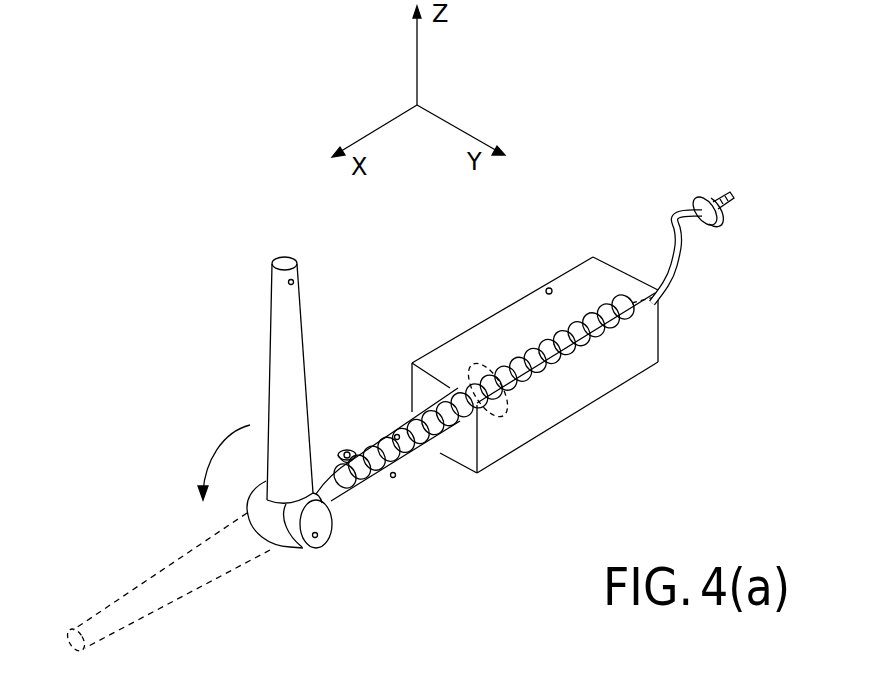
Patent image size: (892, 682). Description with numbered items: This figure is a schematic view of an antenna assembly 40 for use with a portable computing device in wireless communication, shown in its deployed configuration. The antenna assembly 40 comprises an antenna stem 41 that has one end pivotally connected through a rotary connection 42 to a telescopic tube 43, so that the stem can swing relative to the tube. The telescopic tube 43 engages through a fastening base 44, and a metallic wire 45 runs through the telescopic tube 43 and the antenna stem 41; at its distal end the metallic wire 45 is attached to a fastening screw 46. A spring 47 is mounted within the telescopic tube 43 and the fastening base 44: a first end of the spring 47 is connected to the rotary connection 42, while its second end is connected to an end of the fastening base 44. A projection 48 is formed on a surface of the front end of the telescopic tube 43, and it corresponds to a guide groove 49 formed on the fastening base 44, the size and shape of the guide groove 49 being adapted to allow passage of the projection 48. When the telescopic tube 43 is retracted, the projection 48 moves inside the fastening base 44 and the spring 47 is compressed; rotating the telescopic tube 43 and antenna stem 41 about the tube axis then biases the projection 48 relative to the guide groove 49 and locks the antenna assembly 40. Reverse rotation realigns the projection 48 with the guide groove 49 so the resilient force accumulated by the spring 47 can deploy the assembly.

The antenna assembly 40 is at (596, 451).
The antenna stem 41 is at (293, 281).
The rotary connection 42 is at (315, 538).
The telescopic tube 43 is at (393, 478).
The fastening base 44 is at (549, 288).
The metallic wire 45 is at (684, 262).
The fastening screw 46 is at (698, 194).
The spring 47 is at (397, 436).
The projection 48 is at (347, 450).
The guide groove 49 is at (443, 390).